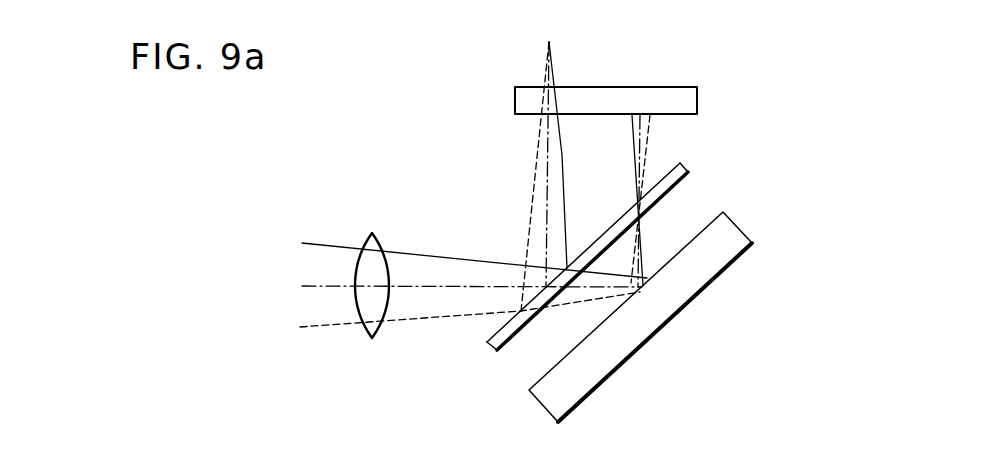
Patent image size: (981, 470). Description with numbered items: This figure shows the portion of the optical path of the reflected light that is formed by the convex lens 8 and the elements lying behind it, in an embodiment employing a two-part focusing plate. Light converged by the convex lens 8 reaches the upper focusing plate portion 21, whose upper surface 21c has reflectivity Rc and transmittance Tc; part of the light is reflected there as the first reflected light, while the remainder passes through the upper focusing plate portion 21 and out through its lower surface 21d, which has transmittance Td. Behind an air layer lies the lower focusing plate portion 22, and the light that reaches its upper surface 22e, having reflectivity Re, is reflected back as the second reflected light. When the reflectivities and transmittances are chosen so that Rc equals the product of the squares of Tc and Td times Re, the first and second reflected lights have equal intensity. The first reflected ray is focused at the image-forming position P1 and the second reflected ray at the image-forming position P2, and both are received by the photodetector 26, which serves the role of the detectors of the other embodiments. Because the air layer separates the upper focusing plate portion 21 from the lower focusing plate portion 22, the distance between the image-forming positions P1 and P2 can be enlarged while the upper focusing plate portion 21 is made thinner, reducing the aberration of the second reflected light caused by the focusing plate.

The convex lens 8 is at (374, 233).
The upper focusing plate portion 21 is at (568, 260).
The upper surface of the upper focusing plate portion 21c is at (492, 332).
The lower surface of the upper focusing plate portion 21d is at (500, 352).
The lower focusing plate portion 22 is at (669, 294).
The upper surface of the lower focusing plate portion 22e is at (703, 207).
The photodetector 26 is at (683, 87).
The image-forming position of the first reflected ray P1 is at (549, 42).
The image-forming position of the second reflected ray P2 is at (638, 203).